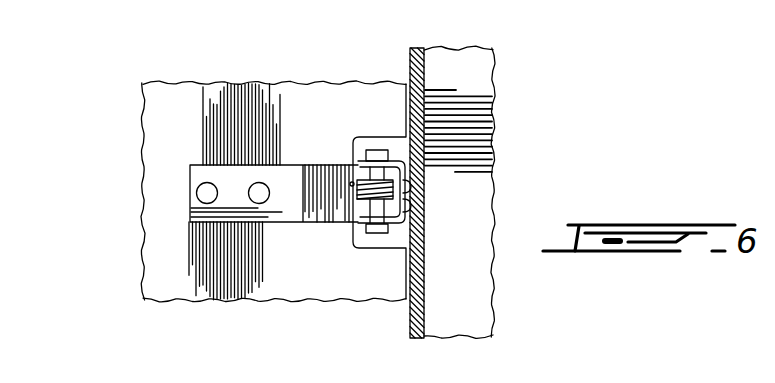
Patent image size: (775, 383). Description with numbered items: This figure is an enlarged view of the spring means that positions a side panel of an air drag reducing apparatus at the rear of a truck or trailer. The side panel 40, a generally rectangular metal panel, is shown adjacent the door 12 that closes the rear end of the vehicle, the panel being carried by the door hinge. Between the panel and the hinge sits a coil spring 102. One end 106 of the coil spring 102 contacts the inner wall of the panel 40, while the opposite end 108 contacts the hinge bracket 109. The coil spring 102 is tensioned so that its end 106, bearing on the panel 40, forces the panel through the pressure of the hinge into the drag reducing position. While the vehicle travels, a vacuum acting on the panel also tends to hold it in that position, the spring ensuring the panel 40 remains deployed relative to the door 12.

The door 12 is at (409, 328).
The side panel 40 is at (178, 121).
The coil spring 102 is at (357, 202).
The spring end 106 is at (350, 184).
The opposite spring end 108 is at (408, 208).
The hinge bracket 109 is at (408, 188).